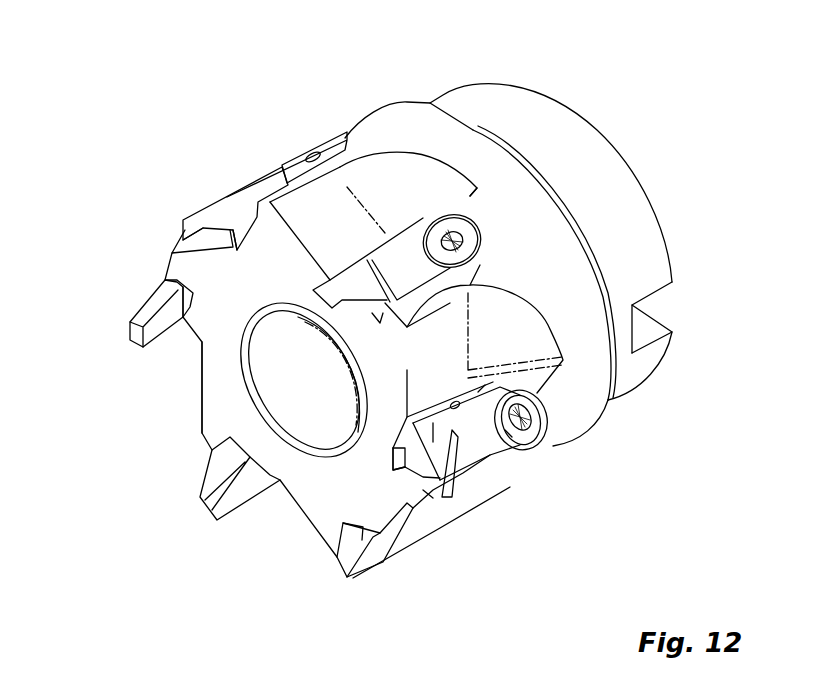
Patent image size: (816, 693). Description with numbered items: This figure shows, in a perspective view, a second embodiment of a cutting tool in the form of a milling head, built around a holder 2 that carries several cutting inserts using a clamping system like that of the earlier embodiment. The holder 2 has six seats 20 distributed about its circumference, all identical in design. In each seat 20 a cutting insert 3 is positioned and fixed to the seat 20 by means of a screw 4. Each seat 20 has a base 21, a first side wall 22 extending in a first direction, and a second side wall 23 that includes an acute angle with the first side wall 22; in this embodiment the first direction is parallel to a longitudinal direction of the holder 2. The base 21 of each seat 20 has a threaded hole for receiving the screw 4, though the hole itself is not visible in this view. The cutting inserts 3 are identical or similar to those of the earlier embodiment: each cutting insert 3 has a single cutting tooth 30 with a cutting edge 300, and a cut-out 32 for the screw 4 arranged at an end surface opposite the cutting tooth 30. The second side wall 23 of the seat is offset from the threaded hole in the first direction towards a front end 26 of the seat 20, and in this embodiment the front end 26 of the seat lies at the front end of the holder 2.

The holder 2 is at (528, 207).
The cutting insert 3 is at (185, 198).
The screw 4 is at (443, 220).
The seat 20 is at (400, 173).
The base 21 is at (472, 388).
The first side wall 22 is at (490, 450).
The second side wall 23 is at (452, 403).
The front end 26 is at (217, 413).
The cutting tooth 30 is at (430, 497).
The cut-out 32 is at (508, 433).
The cutting edge 300 is at (400, 453).